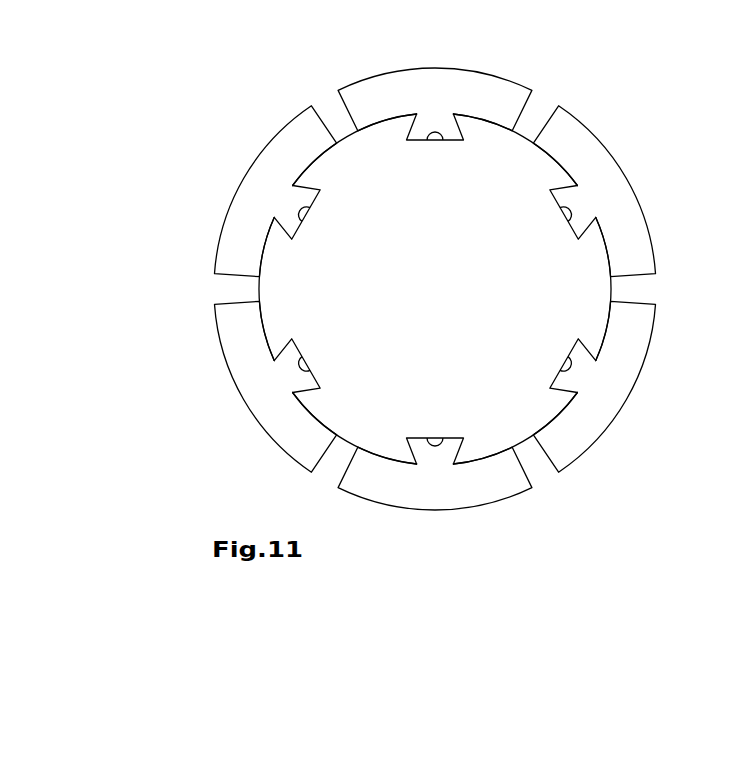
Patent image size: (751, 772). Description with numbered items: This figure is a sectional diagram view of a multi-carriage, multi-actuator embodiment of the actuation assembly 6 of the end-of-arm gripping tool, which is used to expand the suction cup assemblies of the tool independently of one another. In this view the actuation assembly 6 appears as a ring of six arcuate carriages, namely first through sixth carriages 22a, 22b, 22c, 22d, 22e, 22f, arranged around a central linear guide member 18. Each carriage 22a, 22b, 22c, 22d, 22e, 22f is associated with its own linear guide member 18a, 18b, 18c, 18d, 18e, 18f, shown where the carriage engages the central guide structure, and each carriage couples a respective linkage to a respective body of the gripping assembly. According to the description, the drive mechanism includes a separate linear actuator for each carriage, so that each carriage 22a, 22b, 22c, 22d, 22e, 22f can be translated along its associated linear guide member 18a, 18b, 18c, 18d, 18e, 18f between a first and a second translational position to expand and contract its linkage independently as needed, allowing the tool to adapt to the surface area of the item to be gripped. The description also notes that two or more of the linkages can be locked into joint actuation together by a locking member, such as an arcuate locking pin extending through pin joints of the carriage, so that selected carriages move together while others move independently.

The actuation assembly 6 is at (178, 284).
The linear guide member 18 is at (446, 308).
The linear guide member 18a is at (447, 141).
The linear guide member 18b is at (571, 224).
The linear guide member 18c is at (559, 376).
The linear guide member 18d is at (422, 438).
The linear guide member 18e is at (294, 360).
The linear guide member 18f is at (308, 203).
The first carriage 22a is at (437, 93).
The second carriage 22b is at (610, 199).
The third carriage 22c is at (602, 383).
The fourth carriage 22d is at (437, 490).
The fifth carriage 22e is at (267, 385).
The sixth carriage 22f is at (262, 193).